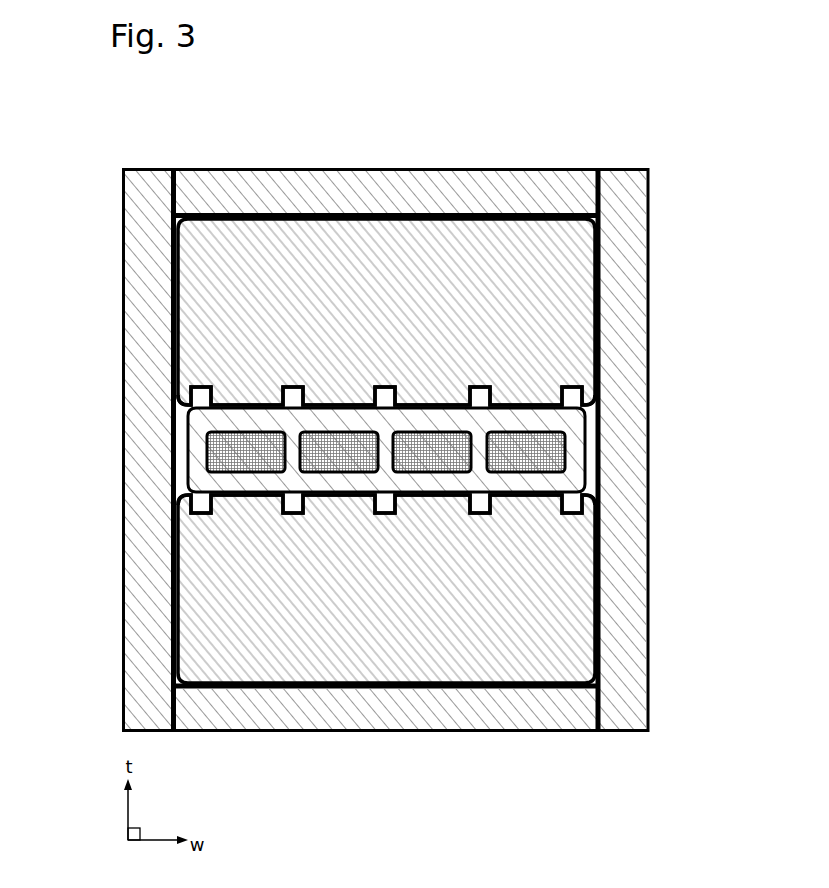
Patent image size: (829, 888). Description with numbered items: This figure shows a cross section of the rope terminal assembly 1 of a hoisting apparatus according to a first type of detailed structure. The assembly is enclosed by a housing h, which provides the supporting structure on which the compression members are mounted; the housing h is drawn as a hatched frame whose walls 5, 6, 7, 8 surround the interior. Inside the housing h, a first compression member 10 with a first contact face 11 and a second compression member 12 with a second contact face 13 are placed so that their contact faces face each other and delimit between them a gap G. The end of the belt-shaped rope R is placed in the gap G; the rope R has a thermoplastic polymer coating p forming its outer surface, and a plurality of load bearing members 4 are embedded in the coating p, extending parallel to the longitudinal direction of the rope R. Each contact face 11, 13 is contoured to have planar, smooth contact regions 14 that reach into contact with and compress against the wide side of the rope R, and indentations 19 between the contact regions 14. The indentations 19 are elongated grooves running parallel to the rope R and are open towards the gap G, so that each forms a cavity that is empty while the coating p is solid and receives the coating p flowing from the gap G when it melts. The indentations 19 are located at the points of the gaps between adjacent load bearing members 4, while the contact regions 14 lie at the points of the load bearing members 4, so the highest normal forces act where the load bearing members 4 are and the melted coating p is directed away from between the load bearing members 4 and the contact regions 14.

The rope terminal assembly 1 is at (655, 78).
The load bearing member 4 is at (257, 473).
The side wall 5 is at (139, 365).
The side wall 6 is at (636, 600).
The top wall 7 is at (281, 208).
The bottom wall 8 is at (361, 727).
The first compression member 10 is at (359, 318).
The first contact face 11 is at (178, 412).
The second compression member 12 is at (359, 620).
The second contact face 13 is at (178, 488).
The contact region 14 is at (248, 404).
The indentation 19 is at (574, 393).
The gap G is at (590, 423).
The belt-shaped rope R is at (187, 470).
The housing h is at (650, 168).
The thermoplastic polymer coating p is at (238, 483).